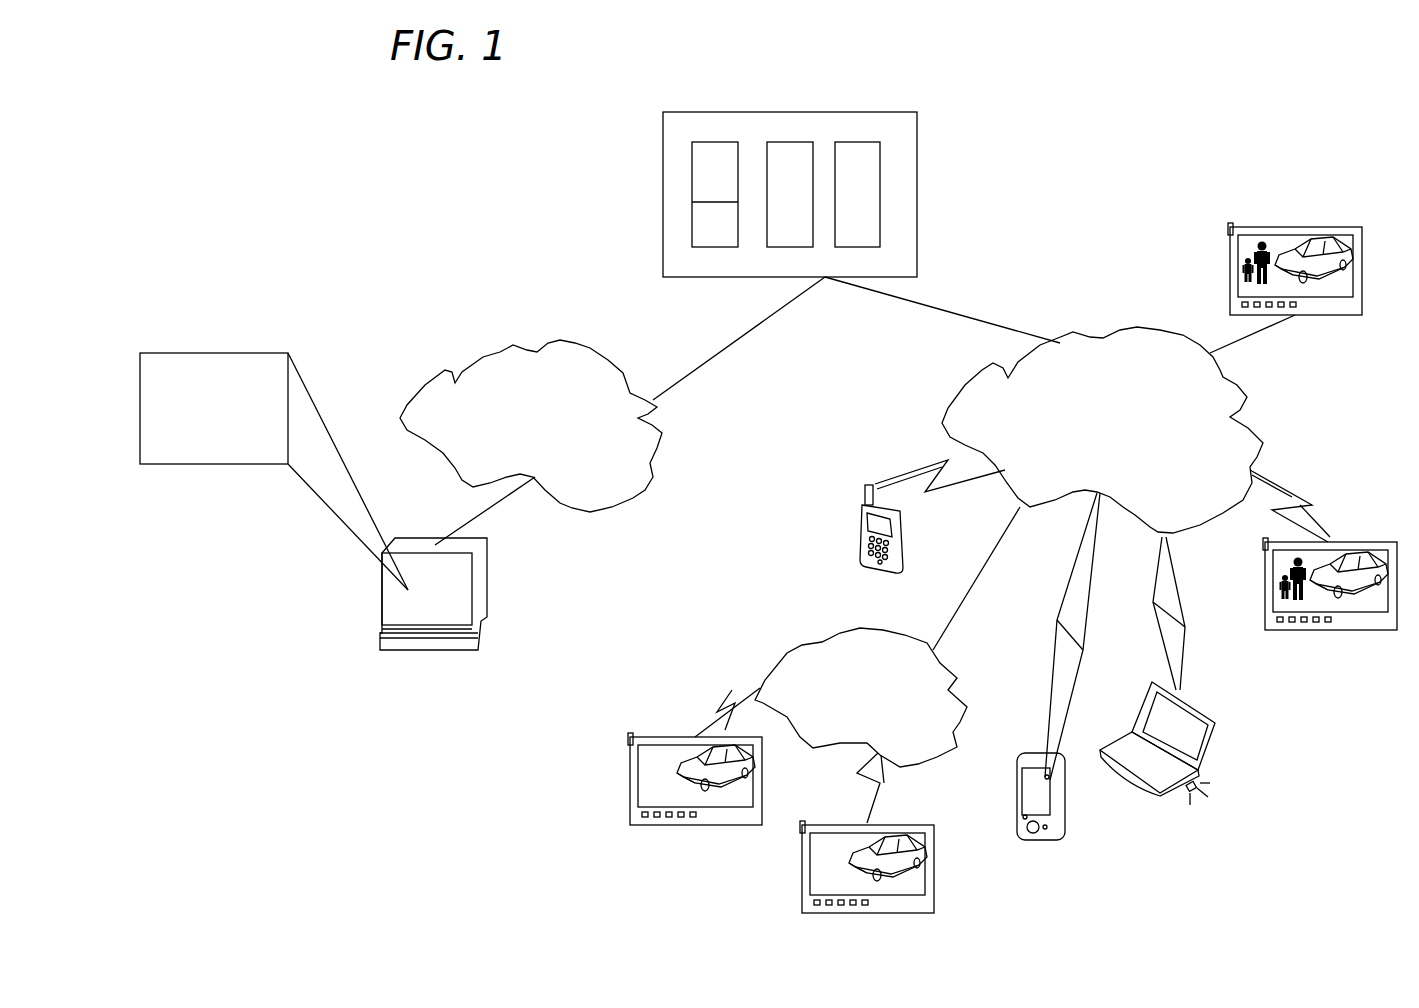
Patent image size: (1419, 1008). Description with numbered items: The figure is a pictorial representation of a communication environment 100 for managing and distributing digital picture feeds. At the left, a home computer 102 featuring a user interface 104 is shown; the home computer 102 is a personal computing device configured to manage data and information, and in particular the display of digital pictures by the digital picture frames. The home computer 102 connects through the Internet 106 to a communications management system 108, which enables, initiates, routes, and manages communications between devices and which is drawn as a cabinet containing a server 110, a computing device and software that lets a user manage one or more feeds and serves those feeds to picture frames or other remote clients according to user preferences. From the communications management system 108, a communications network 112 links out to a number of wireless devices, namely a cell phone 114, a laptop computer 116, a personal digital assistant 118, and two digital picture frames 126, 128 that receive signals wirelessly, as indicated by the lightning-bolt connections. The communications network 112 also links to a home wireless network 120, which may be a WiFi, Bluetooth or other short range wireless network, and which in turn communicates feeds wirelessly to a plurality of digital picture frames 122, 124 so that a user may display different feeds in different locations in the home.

The communication environment 100 is at (338, 169).
The home computer 102 is at (378, 634).
The user interface 104 is at (200, 459).
The Internet 106 is at (517, 449).
The communications management system 108 is at (876, 159).
The server 110 is at (865, 230).
The communications network 112 is at (1087, 455).
The cell phone 114 is at (868, 517).
The laptop computer 116 is at (1207, 727).
The personal digital assistant 118 is at (1040, 797).
The home wireless network 120 is at (843, 736).
The digital picture frame 122 is at (665, 805).
The digital picture frame 124 is at (827, 895).
The digital picture frame 126 is at (1368, 615).
The digital picture frame 128 is at (1332, 303).